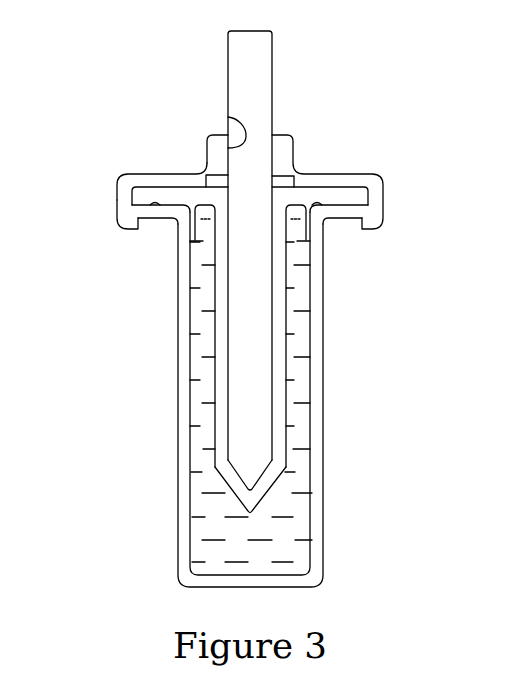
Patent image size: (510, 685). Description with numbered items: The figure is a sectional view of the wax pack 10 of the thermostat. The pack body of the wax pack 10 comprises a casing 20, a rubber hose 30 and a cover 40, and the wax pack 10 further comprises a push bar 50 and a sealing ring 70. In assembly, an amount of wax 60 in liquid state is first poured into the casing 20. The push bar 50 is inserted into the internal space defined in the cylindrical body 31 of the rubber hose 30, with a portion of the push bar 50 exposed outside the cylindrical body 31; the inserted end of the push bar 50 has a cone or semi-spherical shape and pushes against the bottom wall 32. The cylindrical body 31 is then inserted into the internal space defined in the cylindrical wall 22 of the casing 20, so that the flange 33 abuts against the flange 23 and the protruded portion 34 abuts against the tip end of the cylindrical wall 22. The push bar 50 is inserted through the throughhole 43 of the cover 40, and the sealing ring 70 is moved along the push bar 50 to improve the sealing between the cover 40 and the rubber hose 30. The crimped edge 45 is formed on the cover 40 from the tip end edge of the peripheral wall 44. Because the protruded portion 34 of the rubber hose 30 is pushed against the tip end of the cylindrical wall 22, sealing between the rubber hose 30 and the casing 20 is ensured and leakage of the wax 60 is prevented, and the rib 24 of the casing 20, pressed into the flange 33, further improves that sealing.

The wax pack 10 is at (135, 95).
The casing 20 is at (178, 387).
The cylindrical wall 22 is at (180, 447).
The flange 23 is at (150, 219).
The rib 24 is at (352, 207).
The rubber hose 30 is at (288, 323).
The cylindrical body 31 is at (286, 403).
The bottom wall 32 is at (268, 483).
The flange 33 is at (153, 199).
The protruded portion 34 is at (309, 209).
The cover 40 is at (333, 175).
The throughhole 43 is at (229, 116).
The peripheral wall 44 is at (116, 200).
The crimped edge 45 is at (128, 230).
The push bar 50 is at (267, 82).
The wax 60 is at (208, 528).
The sealing ring 70 is at (286, 182).